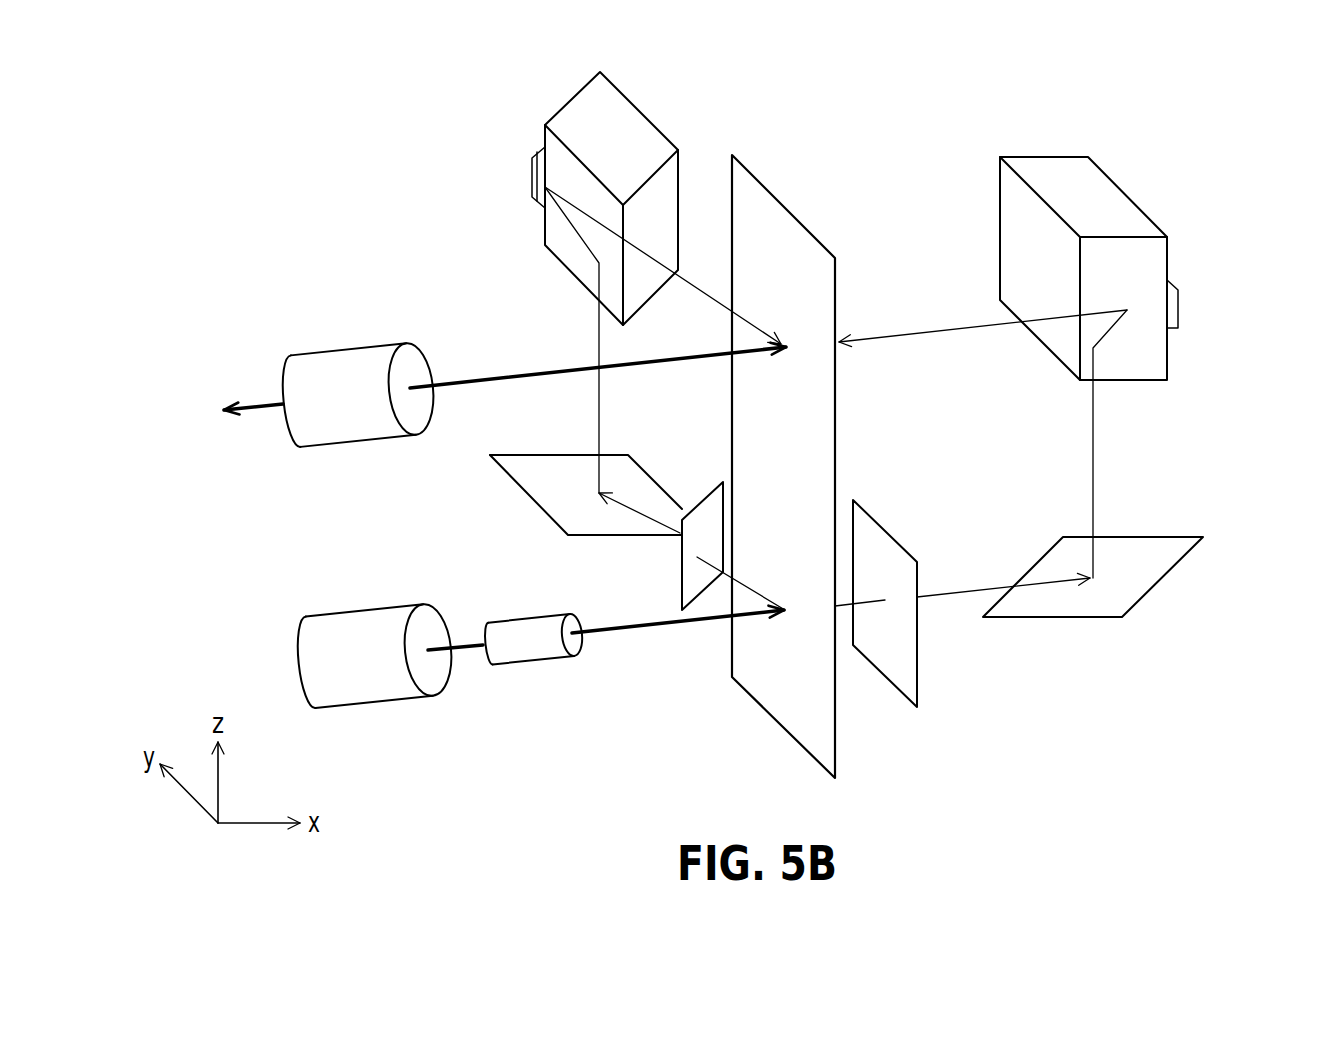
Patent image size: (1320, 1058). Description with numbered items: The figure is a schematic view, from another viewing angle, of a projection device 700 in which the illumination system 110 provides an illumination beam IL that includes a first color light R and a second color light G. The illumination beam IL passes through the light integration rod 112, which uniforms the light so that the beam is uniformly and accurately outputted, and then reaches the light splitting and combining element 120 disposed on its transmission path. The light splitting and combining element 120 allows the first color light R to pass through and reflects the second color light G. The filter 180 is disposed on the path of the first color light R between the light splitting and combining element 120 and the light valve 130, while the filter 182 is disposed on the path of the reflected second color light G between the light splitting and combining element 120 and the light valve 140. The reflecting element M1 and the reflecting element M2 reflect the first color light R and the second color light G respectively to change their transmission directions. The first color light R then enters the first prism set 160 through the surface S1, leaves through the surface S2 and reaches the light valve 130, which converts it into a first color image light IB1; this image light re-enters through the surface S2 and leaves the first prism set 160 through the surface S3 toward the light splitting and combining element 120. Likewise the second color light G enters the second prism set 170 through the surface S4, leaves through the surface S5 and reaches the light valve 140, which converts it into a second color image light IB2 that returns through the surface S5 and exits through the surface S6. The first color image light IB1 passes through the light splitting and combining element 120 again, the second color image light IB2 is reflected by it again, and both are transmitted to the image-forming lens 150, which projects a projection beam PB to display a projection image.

The illumination system 110 is at (372, 630).
The light integration rod 112 is at (528, 643).
The light splitting and combining element 120 is at (795, 712).
The light valve 130 is at (1173, 307).
The light valve 140 is at (537, 178).
The image-forming lens 150 is at (346, 363).
The first prism set 160 is at (1117, 205).
The second prism set 170 is at (575, 113).
The filter 180 is at (885, 668).
The filter 182 is at (688, 585).
The projection device 700 is at (1319, 797).
The second color light G is at (680, 545).
The reflecting element M1 is at (1150, 570).
The reflecting element M2 is at (548, 490).
The first color light R is at (940, 595).
The illumination beam IL is at (687, 623).
The projection beam PB is at (486, 387).
The first color image light IB1 is at (900, 338).
The second color image light IB2 is at (703, 293).
The first surface S1 is at (1125, 385).
The second surface S2 is at (1169, 358).
The third surface S3 is at (1022, 250).
The fourth surface S4 is at (573, 275).
The fifth surface S5 is at (543, 223).
The sixth surface S6 is at (662, 210).